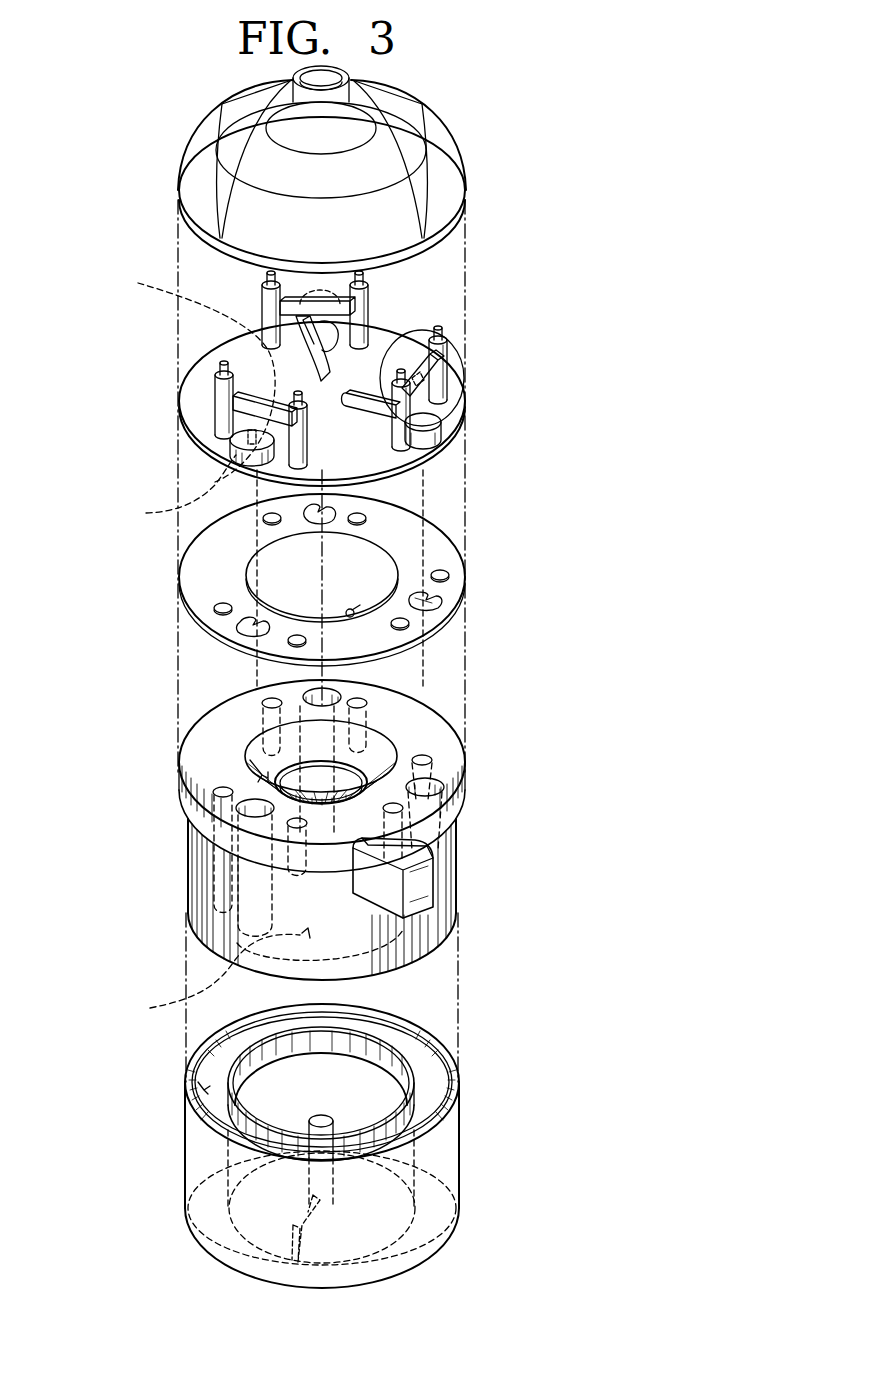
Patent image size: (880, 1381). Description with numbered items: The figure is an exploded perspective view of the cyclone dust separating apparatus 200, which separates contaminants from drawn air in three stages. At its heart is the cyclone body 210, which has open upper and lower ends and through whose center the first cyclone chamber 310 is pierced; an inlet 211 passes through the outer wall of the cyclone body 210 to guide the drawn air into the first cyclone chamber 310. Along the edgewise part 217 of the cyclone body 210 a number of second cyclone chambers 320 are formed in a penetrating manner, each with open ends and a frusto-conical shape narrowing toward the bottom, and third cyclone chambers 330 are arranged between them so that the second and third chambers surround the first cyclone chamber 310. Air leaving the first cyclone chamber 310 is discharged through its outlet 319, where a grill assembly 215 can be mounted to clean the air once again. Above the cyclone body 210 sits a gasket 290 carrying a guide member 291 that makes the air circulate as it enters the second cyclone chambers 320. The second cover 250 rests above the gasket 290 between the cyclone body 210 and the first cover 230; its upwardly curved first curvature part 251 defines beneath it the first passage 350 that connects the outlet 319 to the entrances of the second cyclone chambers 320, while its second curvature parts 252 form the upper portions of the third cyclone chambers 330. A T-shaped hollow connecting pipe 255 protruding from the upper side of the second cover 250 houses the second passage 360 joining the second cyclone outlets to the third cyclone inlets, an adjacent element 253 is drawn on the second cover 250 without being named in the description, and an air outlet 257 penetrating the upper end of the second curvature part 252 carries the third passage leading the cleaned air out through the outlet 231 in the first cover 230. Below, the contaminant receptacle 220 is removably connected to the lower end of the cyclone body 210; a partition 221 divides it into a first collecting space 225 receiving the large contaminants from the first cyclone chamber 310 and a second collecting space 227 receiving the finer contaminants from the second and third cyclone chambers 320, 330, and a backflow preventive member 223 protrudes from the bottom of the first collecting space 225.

The cyclone dust separating apparatus 200 is at (100, 108).
The first cover 230 is at (443, 152).
The outlet 231 is at (337, 78).
The second cover 250 is at (437, 440).
The first curvature part 251 is at (395, 340).
The second curvature parts 252 is at (238, 440).
The lever 253 is at (237, 406).
The T-shaped hollow connecting pipe 255 is at (443, 360).
The air outlet 257 is at (222, 365).
The second passage 360 is at (196, 371).
The first passage 350 is at (174, 489).
The gasket 290 is at (444, 546).
The guide member 291 is at (433, 600).
The cyclone body 210 is at (192, 885).
The inlet 211 is at (428, 882).
The grill assembly 215 is at (262, 758).
The edgewise part 217 is at (433, 720).
The outlet 319 is at (250, 785).
The second cyclone chambers 320 is at (432, 795).
The third cyclone chambers 330 is at (430, 760).
The first cyclone chamber 310 is at (252, 975).
The contaminant receptacle 220 is at (193, 1148).
The partition 221 is at (418, 1160).
The backflow preventive member 223 is at (405, 1214).
The first collecting space 225 is at (378, 1070).
The second collecting space 227 is at (200, 1082).